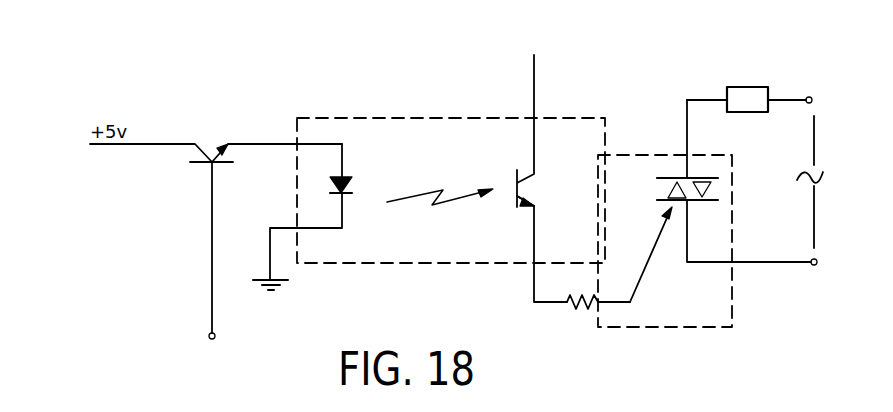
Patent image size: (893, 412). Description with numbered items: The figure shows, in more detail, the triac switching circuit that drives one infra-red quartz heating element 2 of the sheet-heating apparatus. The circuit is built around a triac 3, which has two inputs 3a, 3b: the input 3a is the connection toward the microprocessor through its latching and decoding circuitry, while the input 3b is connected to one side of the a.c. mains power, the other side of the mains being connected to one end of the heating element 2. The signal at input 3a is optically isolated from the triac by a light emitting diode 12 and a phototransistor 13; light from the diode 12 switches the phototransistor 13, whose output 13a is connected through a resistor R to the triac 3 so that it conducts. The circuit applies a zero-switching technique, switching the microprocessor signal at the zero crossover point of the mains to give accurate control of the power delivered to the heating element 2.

The heating element 2 is at (766, 96).
The triac 3 is at (737, 224).
The input 3a is at (215, 326).
The input 3b is at (805, 265).
The light emitting diode 12 is at (354, 170).
The phototransistor 13 is at (514, 177).
The output of the phototransistor 13a is at (592, 220).
The resistor R is at (598, 316).